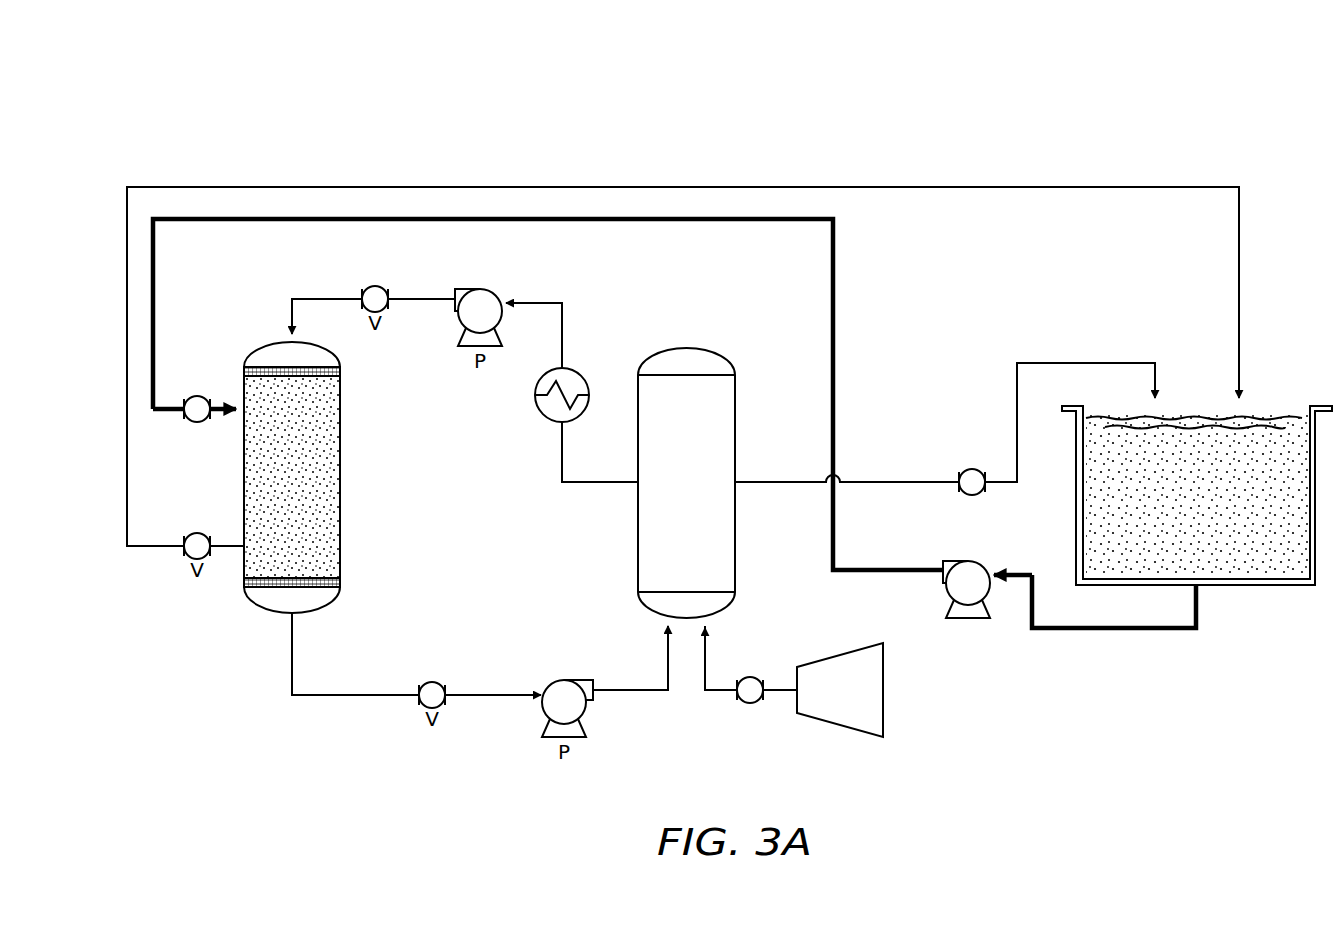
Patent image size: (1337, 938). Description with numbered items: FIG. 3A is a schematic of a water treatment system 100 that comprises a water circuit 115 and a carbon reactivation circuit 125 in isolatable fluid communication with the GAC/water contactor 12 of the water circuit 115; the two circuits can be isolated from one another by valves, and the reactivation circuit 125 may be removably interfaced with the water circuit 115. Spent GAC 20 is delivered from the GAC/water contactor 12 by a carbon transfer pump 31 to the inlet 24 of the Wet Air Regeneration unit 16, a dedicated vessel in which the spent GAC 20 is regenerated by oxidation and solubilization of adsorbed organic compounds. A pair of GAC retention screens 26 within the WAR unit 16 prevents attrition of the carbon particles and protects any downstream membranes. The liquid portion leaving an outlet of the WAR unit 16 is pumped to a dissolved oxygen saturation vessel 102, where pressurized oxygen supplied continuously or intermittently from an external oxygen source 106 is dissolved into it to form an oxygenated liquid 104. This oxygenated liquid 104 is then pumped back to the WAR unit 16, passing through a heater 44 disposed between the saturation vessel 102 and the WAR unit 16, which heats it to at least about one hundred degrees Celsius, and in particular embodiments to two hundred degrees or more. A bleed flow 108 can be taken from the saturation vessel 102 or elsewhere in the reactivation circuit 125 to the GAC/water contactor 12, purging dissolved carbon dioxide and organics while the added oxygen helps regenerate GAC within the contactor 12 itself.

The water treatment system 100 is at (696, 85).
The carbon reactivation circuit 125 is at (406, 158).
The water circuit 115 is at (943, 162).
The inlet 24 is at (240, 402).
The wet air regeneration unit 16 is at (340, 404).
The GAC retention screens 26 is at (340, 373).
The oxygenated liquid 104 is at (562, 452).
The heater 44 is at (572, 372).
The dissolved oxygen saturation vessel 102 is at (638, 542).
The external oxygen source 106 is at (838, 658).
The bleed flow 108 is at (1017, 408).
The carbon transfer pump 31 is at (951, 561).
The spent GAC 20 is at (1115, 631).
The GAC/water contactor 12 is at (1258, 587).